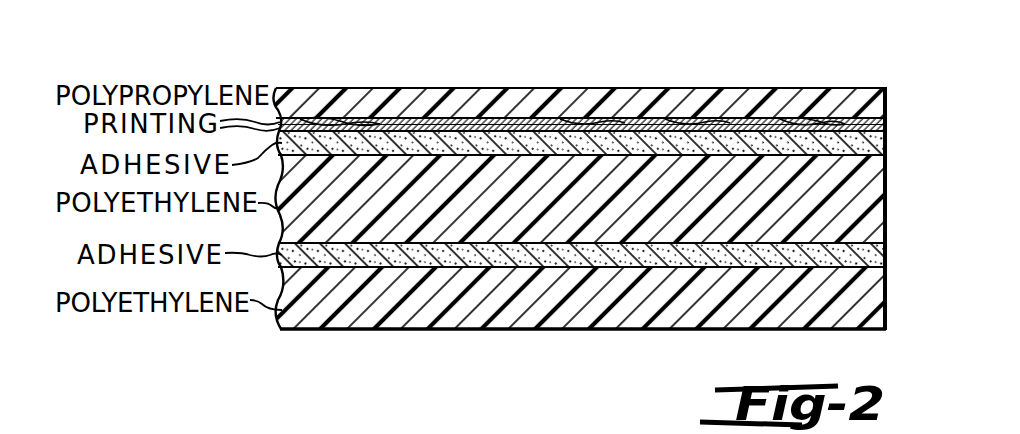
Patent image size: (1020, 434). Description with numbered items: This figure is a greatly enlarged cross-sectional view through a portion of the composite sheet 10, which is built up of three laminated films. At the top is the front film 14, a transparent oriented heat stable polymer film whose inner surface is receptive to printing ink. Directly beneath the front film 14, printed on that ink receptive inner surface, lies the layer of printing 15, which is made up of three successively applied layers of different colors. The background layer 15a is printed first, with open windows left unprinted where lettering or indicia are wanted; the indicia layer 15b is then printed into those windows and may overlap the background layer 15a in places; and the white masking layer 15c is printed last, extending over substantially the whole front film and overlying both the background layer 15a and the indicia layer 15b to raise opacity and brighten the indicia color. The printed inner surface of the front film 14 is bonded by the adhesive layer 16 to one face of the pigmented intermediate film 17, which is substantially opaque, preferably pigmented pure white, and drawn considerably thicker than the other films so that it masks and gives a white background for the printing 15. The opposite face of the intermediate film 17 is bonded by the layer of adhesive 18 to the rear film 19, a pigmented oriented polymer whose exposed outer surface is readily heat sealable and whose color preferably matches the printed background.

The composite sheet 10 is at (509, 77).
The front film 14 is at (897, 90).
The layer of printing 15 is at (905, 122).
The background layer 15a is at (243, 82).
The indicia layer 15b is at (592, 119).
The white masking layer 15c is at (686, 119).
The adhesive layer 16 is at (888, 135).
The intermediate film 17 is at (905, 205).
The layer of adhesive 18 is at (887, 248).
The rear film 19 is at (905, 304).